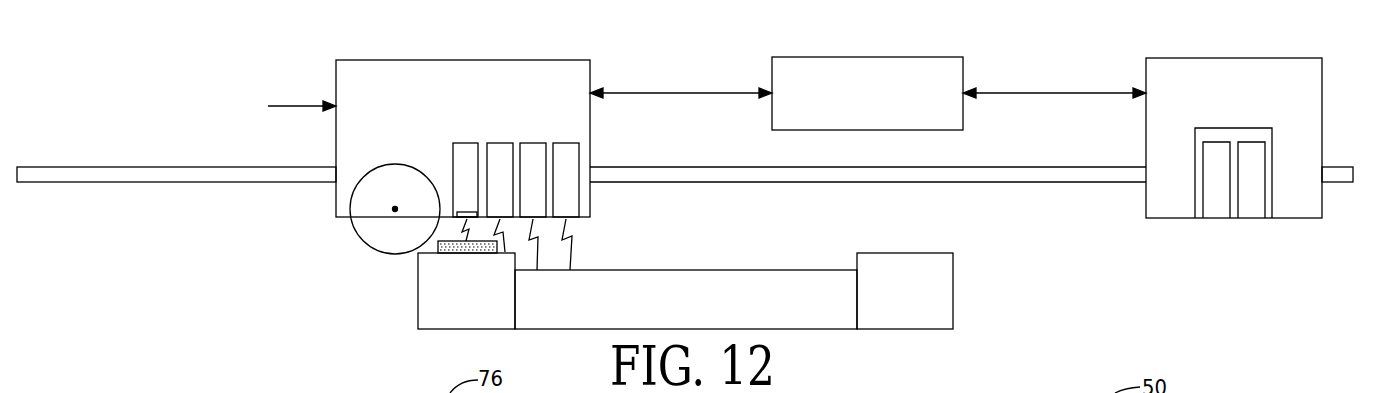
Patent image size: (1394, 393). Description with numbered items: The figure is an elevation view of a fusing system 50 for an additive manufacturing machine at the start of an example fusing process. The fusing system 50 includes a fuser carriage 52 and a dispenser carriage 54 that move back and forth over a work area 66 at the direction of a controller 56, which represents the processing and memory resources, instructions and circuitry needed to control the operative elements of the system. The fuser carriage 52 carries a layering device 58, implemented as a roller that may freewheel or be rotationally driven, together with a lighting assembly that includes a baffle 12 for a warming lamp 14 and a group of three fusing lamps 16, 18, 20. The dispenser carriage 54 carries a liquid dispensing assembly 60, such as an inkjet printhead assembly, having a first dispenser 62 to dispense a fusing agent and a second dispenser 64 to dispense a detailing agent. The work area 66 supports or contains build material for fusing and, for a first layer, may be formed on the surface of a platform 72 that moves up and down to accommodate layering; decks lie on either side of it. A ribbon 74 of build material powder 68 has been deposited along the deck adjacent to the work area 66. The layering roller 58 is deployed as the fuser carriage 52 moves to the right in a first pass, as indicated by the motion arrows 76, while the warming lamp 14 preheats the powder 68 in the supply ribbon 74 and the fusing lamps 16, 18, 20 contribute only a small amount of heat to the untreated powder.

The baffle 12 is at (468, 211).
The warming lamp 14 is at (474, 143).
The fusing lamp 16 is at (506, 143).
The fusing lamp 18 is at (540, 143).
The fusing lamp 20 is at (570, 143).
The fusing system 50 is at (1052, 242).
The fuser carriage 52 is at (347, 92).
The dispenser carriage 54 is at (1310, 95).
The controller 56 is at (942, 117).
The layering device 58 is at (363, 206).
The liquid dispensing assembly 60 is at (1275, 142).
The first dispenser 62 is at (1219, 207).
The second dispenser 64 is at (1254, 207).
The work area 66 is at (688, 270).
The build material powder 68 is at (488, 256).
The platform 72 is at (815, 317).
The ribbon 74 is at (510, 271).
The motion arrows 76 is at (291, 108).